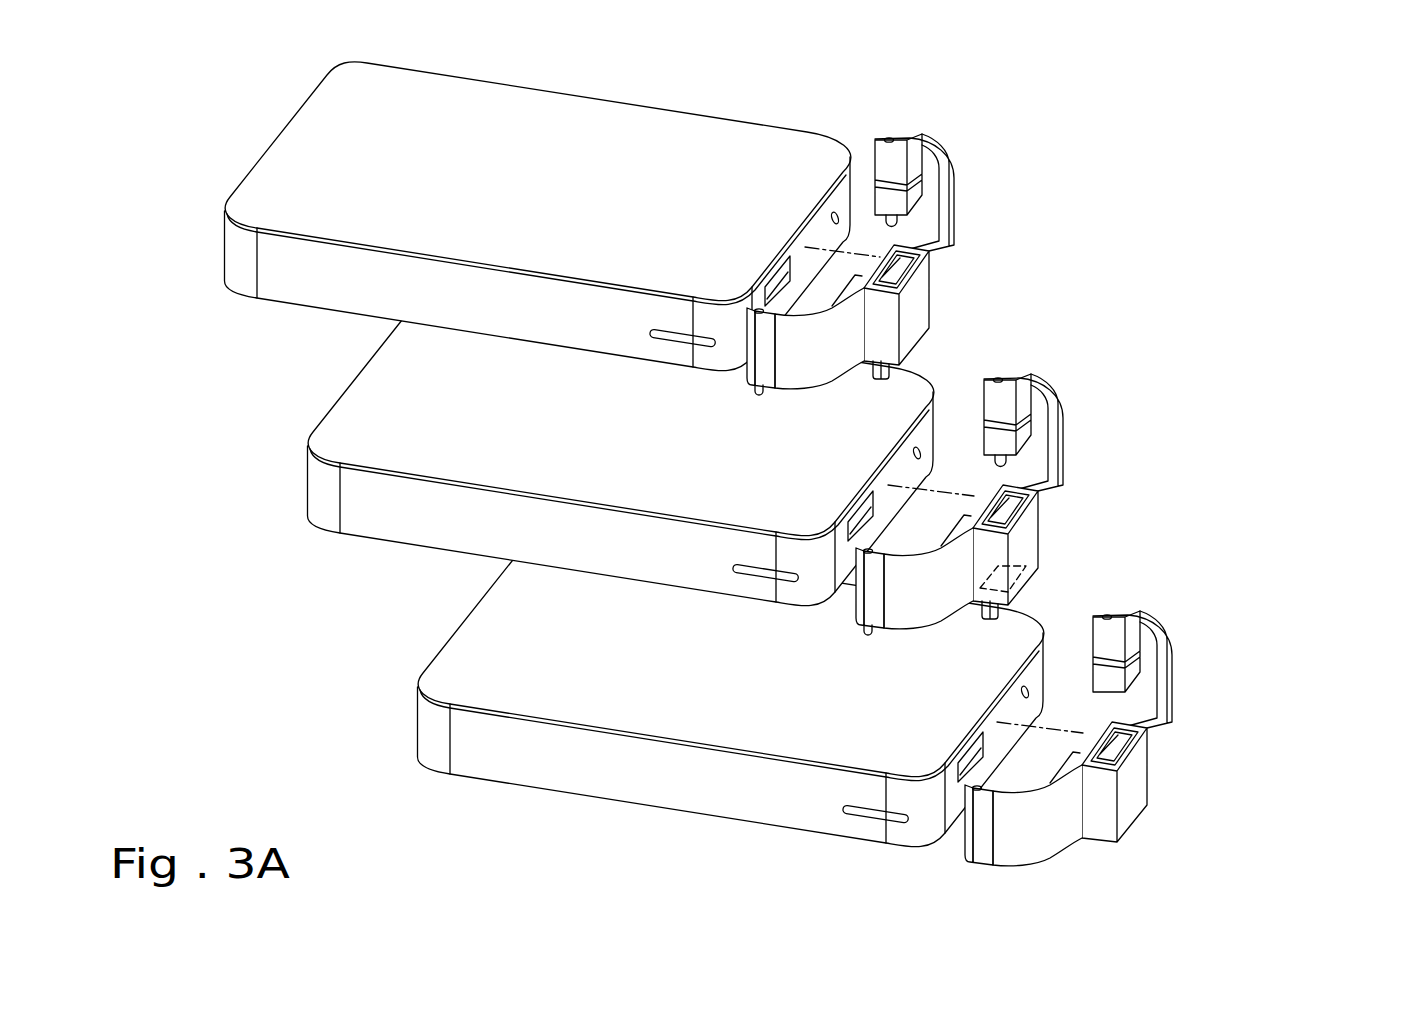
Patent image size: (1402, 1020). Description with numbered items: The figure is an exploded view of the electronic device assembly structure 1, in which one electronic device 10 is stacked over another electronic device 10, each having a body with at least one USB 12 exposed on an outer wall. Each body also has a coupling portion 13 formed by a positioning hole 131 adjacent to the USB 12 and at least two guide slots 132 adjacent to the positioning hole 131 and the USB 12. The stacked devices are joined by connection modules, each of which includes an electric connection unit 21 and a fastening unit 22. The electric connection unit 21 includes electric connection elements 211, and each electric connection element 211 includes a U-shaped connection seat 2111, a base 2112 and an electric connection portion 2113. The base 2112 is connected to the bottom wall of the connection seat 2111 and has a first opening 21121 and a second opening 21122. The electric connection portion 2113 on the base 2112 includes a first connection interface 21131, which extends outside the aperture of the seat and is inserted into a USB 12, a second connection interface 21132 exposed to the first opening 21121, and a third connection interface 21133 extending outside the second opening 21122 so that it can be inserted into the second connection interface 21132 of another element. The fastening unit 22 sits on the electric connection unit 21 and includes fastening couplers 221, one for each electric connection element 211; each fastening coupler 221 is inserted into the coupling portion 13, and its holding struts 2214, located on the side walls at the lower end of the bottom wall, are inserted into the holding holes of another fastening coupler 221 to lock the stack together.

The electronic device assembly structure 1 is at (1221, 114).
The electronic device 10 is at (740, 118).
The USB 12 is at (783, 307).
The coupling portion 13 is at (839, 492).
The positioning hole 131 is at (833, 207).
The guide slot 132 is at (778, 522).
The electric connection unit 21 is at (1025, 470).
The electric connection element 211 is at (1051, 493).
The connection seat 2111 is at (950, 153).
The base 2112 is at (1072, 524).
The first opening 21121 is at (1018, 498).
The second opening 21122 is at (1028, 572).
The electric connection portion 2113 is at (946, 560).
The first connection interface 21131 is at (915, 332).
The second connection interface 21132 is at (883, 281).
The third connection interface 21133 is at (895, 372).
The fastening unit 22 is at (994, 383).
The fastening coupler 221 is at (994, 383).
The holding strut 2214 is at (757, 394).